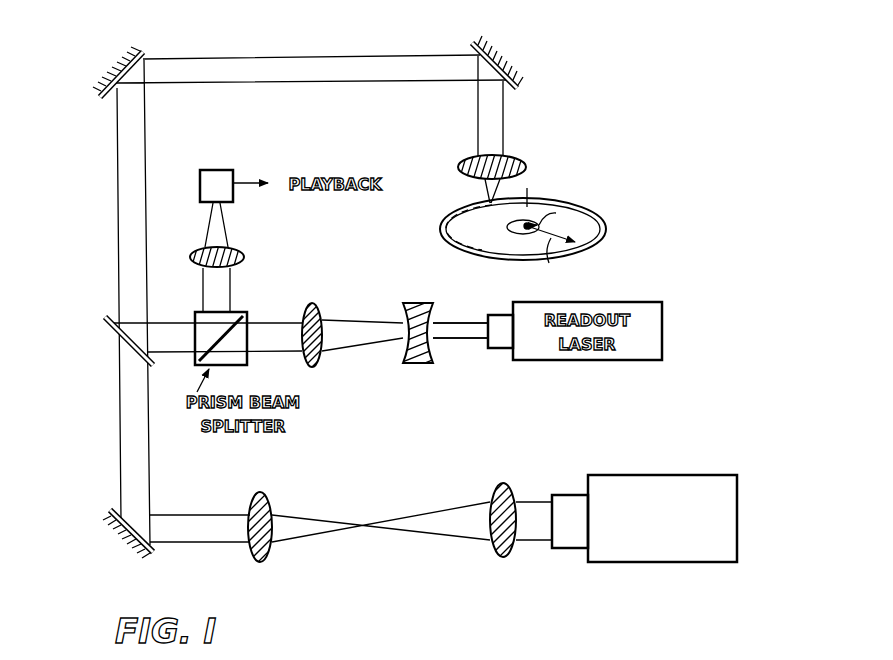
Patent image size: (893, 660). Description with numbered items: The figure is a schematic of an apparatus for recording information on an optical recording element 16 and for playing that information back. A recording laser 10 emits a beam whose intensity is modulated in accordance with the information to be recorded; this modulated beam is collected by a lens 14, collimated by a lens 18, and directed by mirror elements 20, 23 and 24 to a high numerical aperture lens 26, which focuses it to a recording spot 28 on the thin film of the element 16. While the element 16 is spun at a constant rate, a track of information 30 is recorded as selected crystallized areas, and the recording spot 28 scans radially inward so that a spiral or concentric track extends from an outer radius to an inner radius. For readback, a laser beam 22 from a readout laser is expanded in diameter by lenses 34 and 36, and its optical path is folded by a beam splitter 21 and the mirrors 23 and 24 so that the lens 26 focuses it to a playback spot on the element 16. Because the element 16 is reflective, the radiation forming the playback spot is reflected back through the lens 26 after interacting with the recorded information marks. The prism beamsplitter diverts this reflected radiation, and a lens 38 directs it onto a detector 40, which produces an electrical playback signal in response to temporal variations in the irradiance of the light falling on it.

The recording laser 10 is at (538, 541).
The lens 14 is at (497, 553).
The optical recording element 16 is at (592, 198).
The lens 18 is at (272, 556).
The mirror element 20 is at (155, 553).
The beam splitter 21 is at (109, 331).
The laser beam 22 is at (465, 340).
The mirror element 23 is at (143, 52).
The mirror element 24 is at (472, 43).
The high numerical aperture lens 26 is at (520, 159).
The recording spot 28 is at (542, 188).
The track of information 30 is at (460, 231).
The lens 34 is at (428, 311).
The lens 36 is at (315, 306).
The lens 38 is at (242, 254).
The detector 40 is at (209, 170).